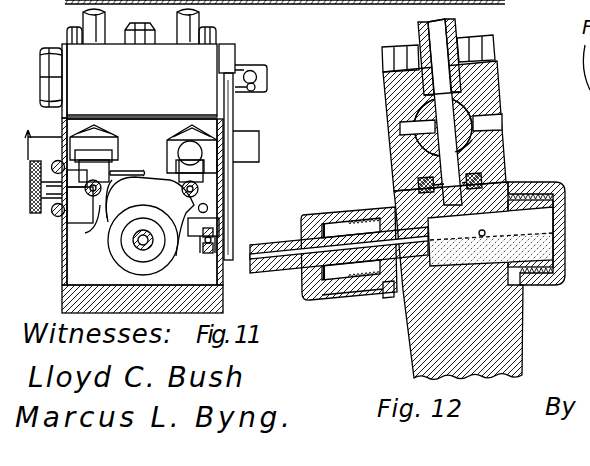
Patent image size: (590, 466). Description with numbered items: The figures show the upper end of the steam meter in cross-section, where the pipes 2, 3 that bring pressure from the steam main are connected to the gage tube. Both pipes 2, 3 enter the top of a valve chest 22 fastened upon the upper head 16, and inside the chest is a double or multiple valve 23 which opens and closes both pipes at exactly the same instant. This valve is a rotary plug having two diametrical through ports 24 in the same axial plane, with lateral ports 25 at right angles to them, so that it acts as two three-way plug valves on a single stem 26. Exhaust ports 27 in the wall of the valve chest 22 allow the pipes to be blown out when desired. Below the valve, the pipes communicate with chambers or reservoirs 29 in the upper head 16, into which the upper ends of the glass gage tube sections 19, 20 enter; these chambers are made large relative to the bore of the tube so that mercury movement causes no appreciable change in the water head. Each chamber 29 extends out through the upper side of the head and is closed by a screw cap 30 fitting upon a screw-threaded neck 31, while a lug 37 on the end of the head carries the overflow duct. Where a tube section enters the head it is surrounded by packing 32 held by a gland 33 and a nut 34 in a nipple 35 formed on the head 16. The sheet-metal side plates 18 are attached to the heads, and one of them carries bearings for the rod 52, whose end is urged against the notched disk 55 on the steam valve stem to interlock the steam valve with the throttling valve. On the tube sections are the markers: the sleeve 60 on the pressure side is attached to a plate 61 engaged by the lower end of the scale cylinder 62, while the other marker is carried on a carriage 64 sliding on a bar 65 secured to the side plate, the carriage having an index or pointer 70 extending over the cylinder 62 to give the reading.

In FIG. 11, the pipe 2 is at (197, 23).
In FIG. 11, the pipe 3 is at (85, 22).
In FIG. 12, the pipe 3 is at (457, 26).
In FIG. 11, the upper head 16 is at (142, 202).
In FIG. 12, the upper head 16 is at (418, 324).
In FIG. 11, the side plate 18 is at (62, 271).
In FIG. 12, the side plate 18 is at (450, 178).
In FIG. 11, the gage tube section 19 is at (198, 192).
In FIG. 11, the gage tube section 20 is at (85, 233).
In FIG. 12, the gage tube section 20 is at (276, 244).
In FIG. 11, the valve chest 22 is at (128, 81).
In FIG. 12, the valve chest 22 is at (392, 89).
In FIG. 12, the double or multiple valve 23 is at (478, 140).
In FIG. 12, the through port 24 is at (443, 127).
In FIG. 12, the lateral port 25 is at (412, 128).
In FIG. 11, the stem 26 is at (257, 70).
In FIG. 12, the exhaust port 27 is at (490, 118).
In FIG. 12, the chamber or reservoir 29 is at (490, 233).
In FIG. 12, the screw cap 30 is at (565, 184).
In FIG. 12, the screw-threaded neck 31 is at (541, 193).
In FIG. 12, the packing 32 is at (366, 220).
In FIG. 12, the gland 33 is at (334, 222).
In FIG. 12, the nut 34 is at (326, 299).
In FIG. 12, the nipple 35 is at (390, 290).
In FIG. 11, the lug 37 is at (250, 142).
In FIG. 11, the rod 52 is at (230, 128).
In FIG. 11, the disk 55 is at (230, 47).
In FIG. 11, the sleeve 60 is at (183, 189).
In FIG. 11, the plate 61 is at (150, 216).
In FIG. 11, the cylinder 62 is at (143, 227).
In FIG. 11, the carriage 64 is at (60, 162).
In FIG. 11, the bar 65 is at (82, 222).
In FIG. 11, the index or pointer 70 is at (143, 172).